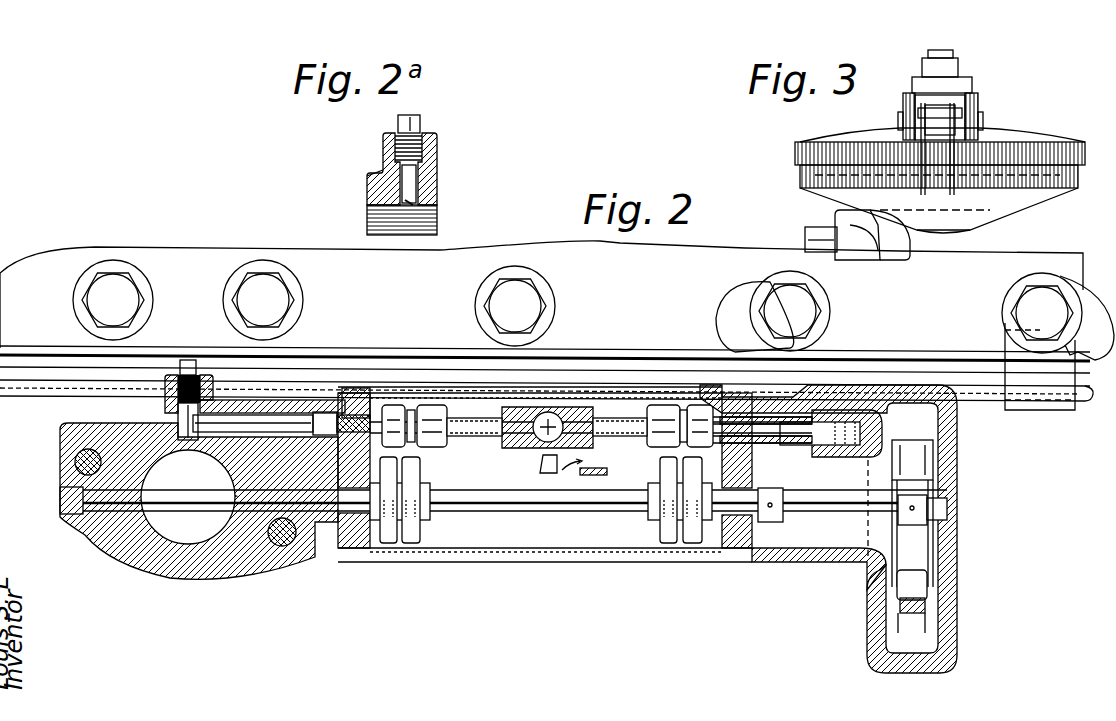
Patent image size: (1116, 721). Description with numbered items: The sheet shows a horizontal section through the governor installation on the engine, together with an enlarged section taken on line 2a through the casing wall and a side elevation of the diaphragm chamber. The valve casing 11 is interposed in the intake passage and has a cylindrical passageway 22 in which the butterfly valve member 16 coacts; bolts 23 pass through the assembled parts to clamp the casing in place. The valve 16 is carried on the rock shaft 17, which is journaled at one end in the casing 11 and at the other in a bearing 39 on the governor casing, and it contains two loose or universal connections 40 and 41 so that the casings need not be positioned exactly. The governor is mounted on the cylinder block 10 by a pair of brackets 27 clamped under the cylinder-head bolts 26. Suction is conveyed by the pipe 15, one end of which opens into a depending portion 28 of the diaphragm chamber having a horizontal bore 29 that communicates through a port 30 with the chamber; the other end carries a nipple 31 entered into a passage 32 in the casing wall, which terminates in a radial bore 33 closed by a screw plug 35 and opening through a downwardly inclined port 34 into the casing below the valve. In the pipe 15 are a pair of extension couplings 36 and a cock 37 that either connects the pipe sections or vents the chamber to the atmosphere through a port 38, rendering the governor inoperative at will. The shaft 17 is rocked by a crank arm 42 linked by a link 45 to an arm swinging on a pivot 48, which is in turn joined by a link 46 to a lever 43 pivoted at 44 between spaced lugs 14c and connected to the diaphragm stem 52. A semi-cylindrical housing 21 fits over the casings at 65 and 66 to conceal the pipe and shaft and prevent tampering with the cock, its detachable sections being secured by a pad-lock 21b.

In FIG. 2A, the cylinder block 10 is at (440, 258).
In FIG. 2, the cylinder block 10 is at (440, 258).
In FIG. 2A, the valve casing 11 is at (437, 150).
In FIG. 2A, the port 34 is at (385, 170).
In FIG. 2, the port 34 is at (165, 440).
In FIG. 3, the pipe 15 is at (808, 237).
In FIG. 2, the pipe 15 is at (620, 430).
In FIG. 2, the valve member 16 is at (107, 533).
In FIG. 2, the shaft 17 is at (252, 440).
In FIG. 2, the housing 21 is at (586, 562).
In FIG. 2, the pad-lock 21b is at (596, 462).
In FIG. 2, the cylindrical passageway 22 is at (167, 540).
In FIG. 2, the bolts 23 is at (280, 548).
In FIG. 2, the bolts 26 is at (805, 312).
In FIG. 2, the brackets 27 is at (720, 320).
In FIG. 2, the depending portion 28 is at (845, 415).
In FIG. 3, the horizontal bore 29 is at (915, 240).
In FIG. 2, the horizontal bore 29 is at (880, 420).
In FIG. 3, the port 30 is at (960, 232).
In FIG. 2, the nipple 31 is at (335, 415).
In FIG. 2, the passage 32 is at (300, 403).
In FIG. 2, the bore 33 is at (178, 432).
In FIG. 2, the screw plug 35 is at (165, 380).
In FIG. 2, the extension couplings 36 is at (412, 410).
In FIG. 2, the cock 37 is at (565, 418).
In FIG. 2, the port 38 is at (548, 410).
In FIG. 2, the bearing 39 is at (742, 530).
In FIG. 2, the universal connection 40 is at (672, 548).
In FIG. 2, the universal connection 41 is at (405, 545).
In FIG. 2, the crank arm 42 is at (920, 470).
In FIG. 3, the lever 43 is at (970, 85).
In FIG. 3, the pivot 44 is at (978, 115).
In FIG. 2, the link 45 is at (895, 545).
In FIG. 3, the link 46 is at (927, 155).
In FIG. 2, the link 46 is at (897, 627).
In FIG. 2, the pivot 48 is at (947, 585).
In FIG. 3, the stem 52 is at (955, 58).
In FIG. 3, the lugs 14c is at (915, 100).
In FIG. 2, the section line 2a is at (190, 360).
In FIG. 2, the housing end portion 65 is at (725, 556).
In FIG. 2, the housing end portion 66 is at (355, 562).